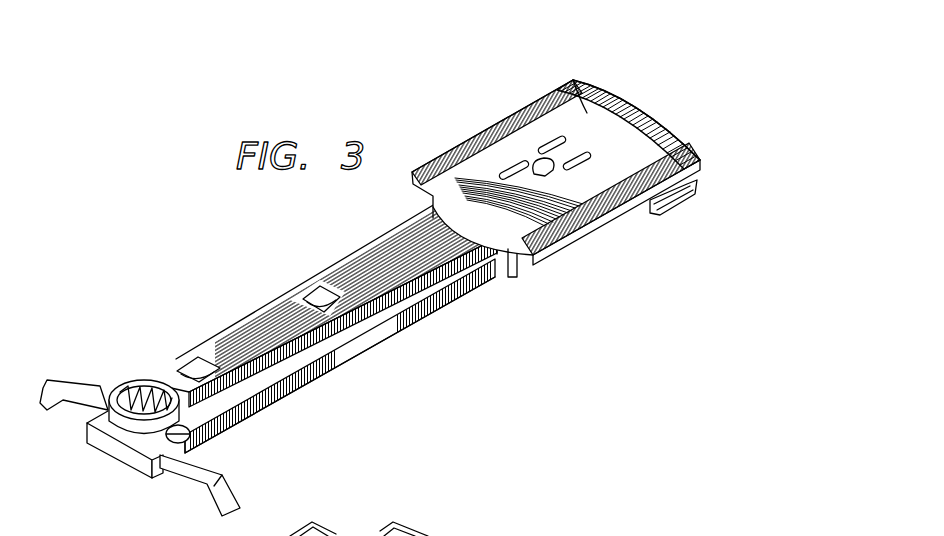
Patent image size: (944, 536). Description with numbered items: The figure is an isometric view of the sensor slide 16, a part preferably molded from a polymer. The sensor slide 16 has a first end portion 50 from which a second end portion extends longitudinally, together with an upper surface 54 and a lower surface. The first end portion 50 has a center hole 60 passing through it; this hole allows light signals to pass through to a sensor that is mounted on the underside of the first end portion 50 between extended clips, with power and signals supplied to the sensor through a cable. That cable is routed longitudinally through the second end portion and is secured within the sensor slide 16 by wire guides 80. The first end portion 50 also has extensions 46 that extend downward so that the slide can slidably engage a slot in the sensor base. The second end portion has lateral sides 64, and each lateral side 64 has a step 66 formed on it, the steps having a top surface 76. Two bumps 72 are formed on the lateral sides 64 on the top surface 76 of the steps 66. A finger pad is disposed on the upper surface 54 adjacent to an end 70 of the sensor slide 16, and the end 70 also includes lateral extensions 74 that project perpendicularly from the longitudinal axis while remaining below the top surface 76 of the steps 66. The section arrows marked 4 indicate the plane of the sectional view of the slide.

The sensor slide 16 is at (676, 86).
The first end portion 50 is at (652, 147).
The upper surface 54 is at (585, 90).
The center hole 60 is at (535, 166).
The extensions 46 is at (677, 196).
The top surface 76 is at (462, 272).
The lateral sides 64 is at (278, 298).
The step 66 is at (318, 378).
The wire guides 80 is at (421, 215).
The bumps 72 is at (117, 383).
The lateral extensions 74 is at (62, 380).
The end 70 is at (120, 448).
The section line 4- 4 is at (473, 305).